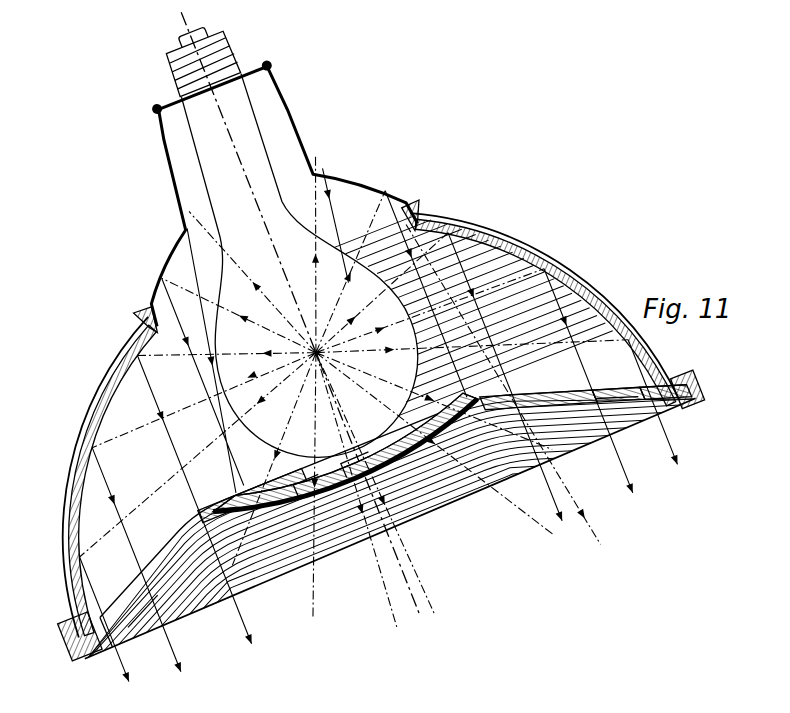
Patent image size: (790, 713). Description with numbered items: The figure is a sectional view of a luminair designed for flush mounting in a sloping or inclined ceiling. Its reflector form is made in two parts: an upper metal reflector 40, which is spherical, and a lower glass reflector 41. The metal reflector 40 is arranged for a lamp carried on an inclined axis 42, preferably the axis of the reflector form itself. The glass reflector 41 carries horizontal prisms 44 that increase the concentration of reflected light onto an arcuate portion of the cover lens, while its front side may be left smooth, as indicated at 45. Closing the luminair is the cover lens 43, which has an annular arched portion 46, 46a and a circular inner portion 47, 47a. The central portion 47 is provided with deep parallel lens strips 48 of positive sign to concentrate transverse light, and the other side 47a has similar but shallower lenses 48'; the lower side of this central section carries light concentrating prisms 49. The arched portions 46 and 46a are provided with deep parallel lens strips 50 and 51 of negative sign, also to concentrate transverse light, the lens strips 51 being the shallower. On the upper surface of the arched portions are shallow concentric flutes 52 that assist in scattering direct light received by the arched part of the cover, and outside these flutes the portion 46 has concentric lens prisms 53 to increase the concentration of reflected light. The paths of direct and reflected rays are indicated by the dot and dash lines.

The metal reflector 40 is at (372, 182).
The glass reflector 41 is at (76, 521).
The inclined axis 42 is at (185, 19).
The cover lens 43 is at (680, 410).
The horizontal prisms 44 is at (600, 298).
The smooth front side 45 is at (86, 510).
The annular arched portion 46 is at (630, 388).
The annular arched portion 46a is at (143, 577).
The circular inner portion 47 is at (452, 420).
The circular inner portion 47a is at (262, 490).
The parallel lens strips 48 is at (348, 461).
The shallower lenses 48' is at (333, 465).
The light concentrating prisms 49 is at (462, 450).
The parallel lens strips 50 is at (150, 612).
The parallel lens strips 51 is at (612, 433).
The concentric flutes 52 is at (195, 512).
The concentric lens prisms 53 is at (600, 378).